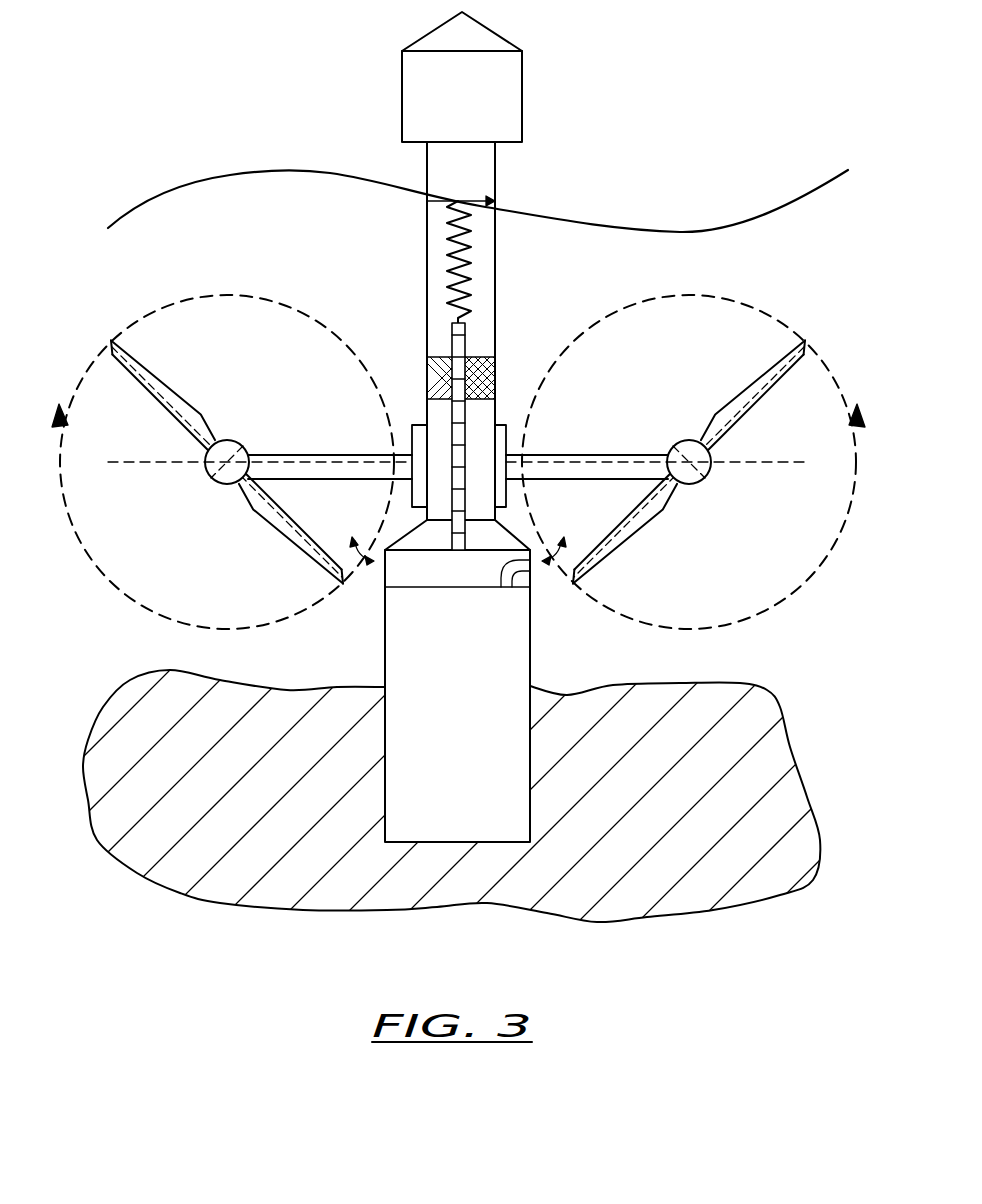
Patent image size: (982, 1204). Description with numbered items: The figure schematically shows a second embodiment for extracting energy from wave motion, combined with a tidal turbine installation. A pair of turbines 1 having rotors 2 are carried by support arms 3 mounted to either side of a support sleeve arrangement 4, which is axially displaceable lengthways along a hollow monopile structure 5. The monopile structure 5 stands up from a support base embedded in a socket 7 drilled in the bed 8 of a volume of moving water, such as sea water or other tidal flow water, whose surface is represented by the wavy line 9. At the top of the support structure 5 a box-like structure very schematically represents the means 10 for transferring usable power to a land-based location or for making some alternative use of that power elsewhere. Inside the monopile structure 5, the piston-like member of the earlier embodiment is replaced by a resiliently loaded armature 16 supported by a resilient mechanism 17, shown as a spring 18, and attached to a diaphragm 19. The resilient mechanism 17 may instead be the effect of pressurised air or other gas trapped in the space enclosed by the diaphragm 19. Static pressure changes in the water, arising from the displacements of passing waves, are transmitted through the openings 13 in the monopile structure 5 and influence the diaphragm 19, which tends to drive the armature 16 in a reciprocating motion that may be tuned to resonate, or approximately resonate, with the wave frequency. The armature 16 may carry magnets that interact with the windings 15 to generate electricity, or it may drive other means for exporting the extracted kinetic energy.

The turbine 1 is at (700, 472).
The rotor 2 is at (778, 358).
The support arm 3 is at (588, 455).
The support sleeve arrangement 4 is at (503, 422).
The hollow monopile structure 5 is at (427, 158).
The socket 7 is at (466, 764).
The bed 8 is at (800, 840).
The surface 9 is at (140, 201).
The power transfer means 10 is at (432, 73).
The openings 13 is at (357, 558).
The windings 15 is at (427, 372).
The armature 16 is at (452, 458).
The resilient mechanism 17 is at (497, 257).
The spring 18 is at (447, 248).
The diaphragm 19 is at (496, 200).